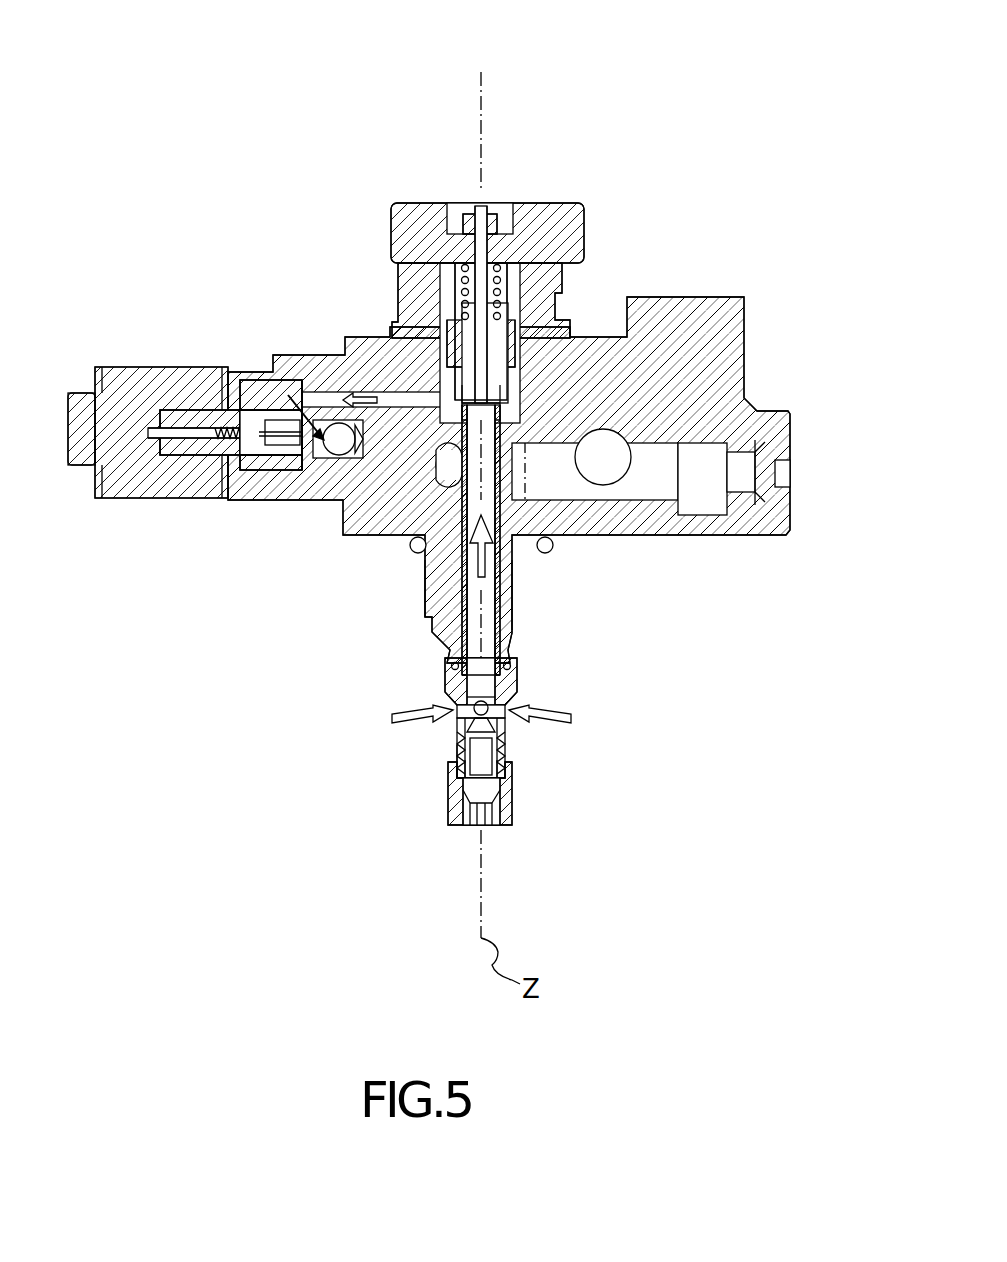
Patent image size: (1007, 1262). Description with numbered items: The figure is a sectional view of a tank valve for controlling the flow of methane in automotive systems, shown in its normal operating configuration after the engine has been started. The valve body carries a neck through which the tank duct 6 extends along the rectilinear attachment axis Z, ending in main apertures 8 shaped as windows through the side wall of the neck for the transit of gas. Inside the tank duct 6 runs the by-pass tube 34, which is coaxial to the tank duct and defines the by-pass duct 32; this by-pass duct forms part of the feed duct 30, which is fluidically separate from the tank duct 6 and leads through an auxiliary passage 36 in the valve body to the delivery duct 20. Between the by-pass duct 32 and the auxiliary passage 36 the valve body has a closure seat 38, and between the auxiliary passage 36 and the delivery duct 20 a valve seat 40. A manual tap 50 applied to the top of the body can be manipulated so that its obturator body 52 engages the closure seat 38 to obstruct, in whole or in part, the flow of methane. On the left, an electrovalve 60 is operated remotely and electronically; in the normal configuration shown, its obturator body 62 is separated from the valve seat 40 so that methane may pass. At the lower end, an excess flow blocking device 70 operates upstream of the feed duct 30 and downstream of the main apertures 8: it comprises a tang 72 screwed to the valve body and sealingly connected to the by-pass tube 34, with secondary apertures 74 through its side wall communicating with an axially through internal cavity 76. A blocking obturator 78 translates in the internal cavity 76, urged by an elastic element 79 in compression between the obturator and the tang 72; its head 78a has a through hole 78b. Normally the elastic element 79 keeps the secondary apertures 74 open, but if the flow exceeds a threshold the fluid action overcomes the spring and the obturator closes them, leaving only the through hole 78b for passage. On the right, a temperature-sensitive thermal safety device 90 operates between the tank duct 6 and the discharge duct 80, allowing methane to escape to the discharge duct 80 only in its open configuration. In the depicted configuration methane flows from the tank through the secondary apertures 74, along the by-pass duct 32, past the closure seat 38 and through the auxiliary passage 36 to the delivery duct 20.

The tank duct 6 is at (505, 613).
The main apertures 8 is at (450, 648).
The delivery duct 20 is at (342, 441).
The feed duct 30 is at (573, 360).
The by-pass duct 32 is at (488, 585).
The by-pass tube 34 is at (467, 588).
The auxiliary passage 36 is at (400, 402).
The closure seat 38 is at (462, 413).
The valve seat 40 is at (308, 447).
The manual tap 50 is at (583, 188).
The obturator body 52 is at (488, 402).
The electrovalve 60 is at (200, 509).
The obturator body 62 is at (255, 375).
The excess flow blocking device 70 is at (525, 772).
The tang 72 is at (505, 780).
The secondary apertures 74 is at (504, 710).
The internal cavity 76 is at (475, 683).
The blocking obturator 78 is at (497, 733).
The head 78a is at (470, 722).
The through hole 78b is at (480, 717).
The elastic element 79 is at (462, 755).
The discharge duct 80 is at (603, 456).
The thermal safety device 90 is at (547, 480).